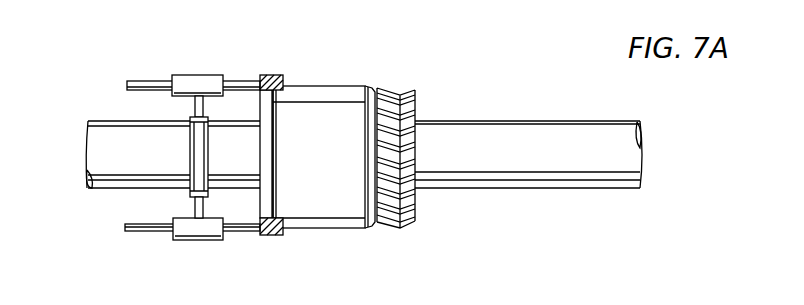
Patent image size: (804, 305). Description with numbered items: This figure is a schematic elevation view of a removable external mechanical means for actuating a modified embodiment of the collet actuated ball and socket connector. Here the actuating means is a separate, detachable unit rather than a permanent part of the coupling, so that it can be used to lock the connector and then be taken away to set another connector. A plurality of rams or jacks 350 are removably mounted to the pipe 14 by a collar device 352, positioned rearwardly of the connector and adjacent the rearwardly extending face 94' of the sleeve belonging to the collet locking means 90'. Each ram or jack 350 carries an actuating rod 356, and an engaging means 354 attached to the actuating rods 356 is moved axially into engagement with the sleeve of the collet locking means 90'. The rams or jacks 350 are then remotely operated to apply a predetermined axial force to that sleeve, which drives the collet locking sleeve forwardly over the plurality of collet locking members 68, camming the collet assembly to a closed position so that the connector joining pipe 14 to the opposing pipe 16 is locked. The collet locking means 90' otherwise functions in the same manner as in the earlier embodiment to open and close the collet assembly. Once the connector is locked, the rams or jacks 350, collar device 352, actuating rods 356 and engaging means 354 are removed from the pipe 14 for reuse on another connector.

The pipe 14 is at (109, 182).
The second tube 16 is at (611, 172).
The collet locking members 68 is at (408, 148).
The collet locking means 90' is at (324, 157).
The rearwardly extending face 94' is at (297, 157).
The rams or jacks 350 is at (195, 75).
The collar device 352 is at (190, 156).
The engaging means 354 is at (277, 75).
The actuating rods 356 is at (245, 81).